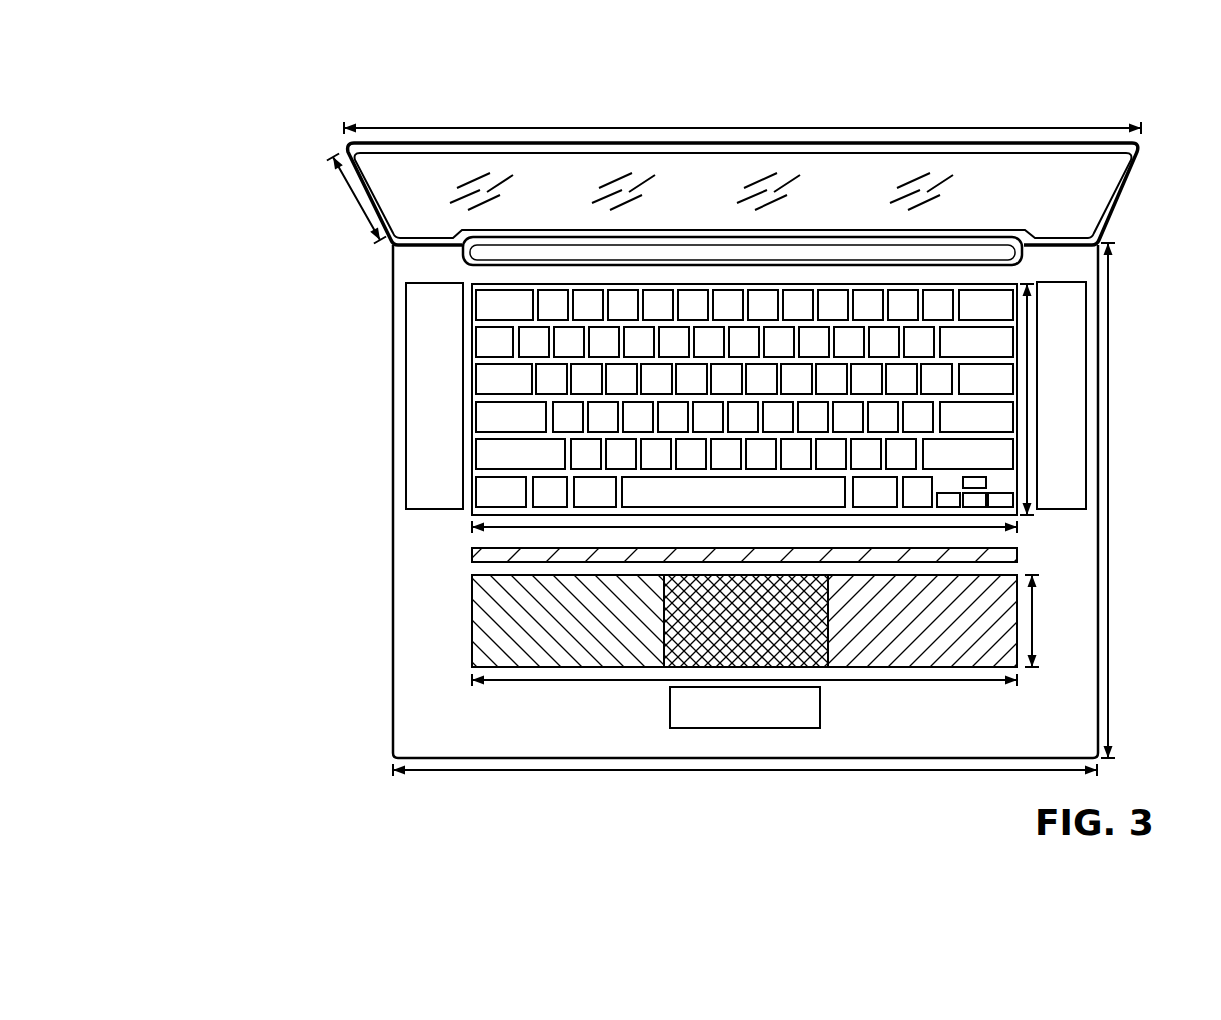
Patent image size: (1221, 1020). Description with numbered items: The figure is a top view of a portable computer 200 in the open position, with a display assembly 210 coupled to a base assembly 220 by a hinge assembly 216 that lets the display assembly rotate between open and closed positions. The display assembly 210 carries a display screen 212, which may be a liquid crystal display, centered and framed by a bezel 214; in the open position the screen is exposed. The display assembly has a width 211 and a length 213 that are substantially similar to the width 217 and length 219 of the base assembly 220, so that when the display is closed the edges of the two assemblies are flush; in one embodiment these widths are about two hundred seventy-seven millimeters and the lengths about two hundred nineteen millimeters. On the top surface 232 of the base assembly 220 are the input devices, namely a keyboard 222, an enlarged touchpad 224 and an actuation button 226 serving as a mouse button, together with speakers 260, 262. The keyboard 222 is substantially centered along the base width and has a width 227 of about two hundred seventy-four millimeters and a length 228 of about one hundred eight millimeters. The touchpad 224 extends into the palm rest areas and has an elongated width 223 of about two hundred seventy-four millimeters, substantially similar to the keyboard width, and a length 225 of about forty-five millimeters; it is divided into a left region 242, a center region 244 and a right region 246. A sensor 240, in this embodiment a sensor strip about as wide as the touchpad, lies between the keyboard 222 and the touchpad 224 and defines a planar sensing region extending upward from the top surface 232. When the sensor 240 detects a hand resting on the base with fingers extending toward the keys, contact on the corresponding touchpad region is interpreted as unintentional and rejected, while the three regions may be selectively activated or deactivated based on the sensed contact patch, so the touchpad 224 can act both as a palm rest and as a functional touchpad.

The portable computer 200 is at (337, 84).
The display assembly 210 is at (326, 182).
The width 211 is at (445, 128).
The display screen 212 is at (1000, 177).
The length 213 is at (356, 207).
The bezel 214 is at (1138, 150).
The hinge assembly 216 is at (478, 247).
The width 217 is at (495, 773).
The length 219 is at (1108, 288).
The base assembly 220 is at (288, 287).
The keyboard 222 is at (487, 498).
The width 223 is at (505, 680).
The touchpad 224 is at (437, 613).
The length 225 is at (1035, 640).
The actuation button 226 is at (688, 713).
The width 227 is at (482, 532).
The length 228 is at (1027, 452).
The top surface 232 is at (415, 740).
The sensor 240 is at (478, 555).
The left region 242 is at (492, 640).
The center region 244 is at (668, 638).
The right region 246 is at (900, 652).
The speaker 260 is at (454, 391).
The speaker 262 is at (1079, 393).